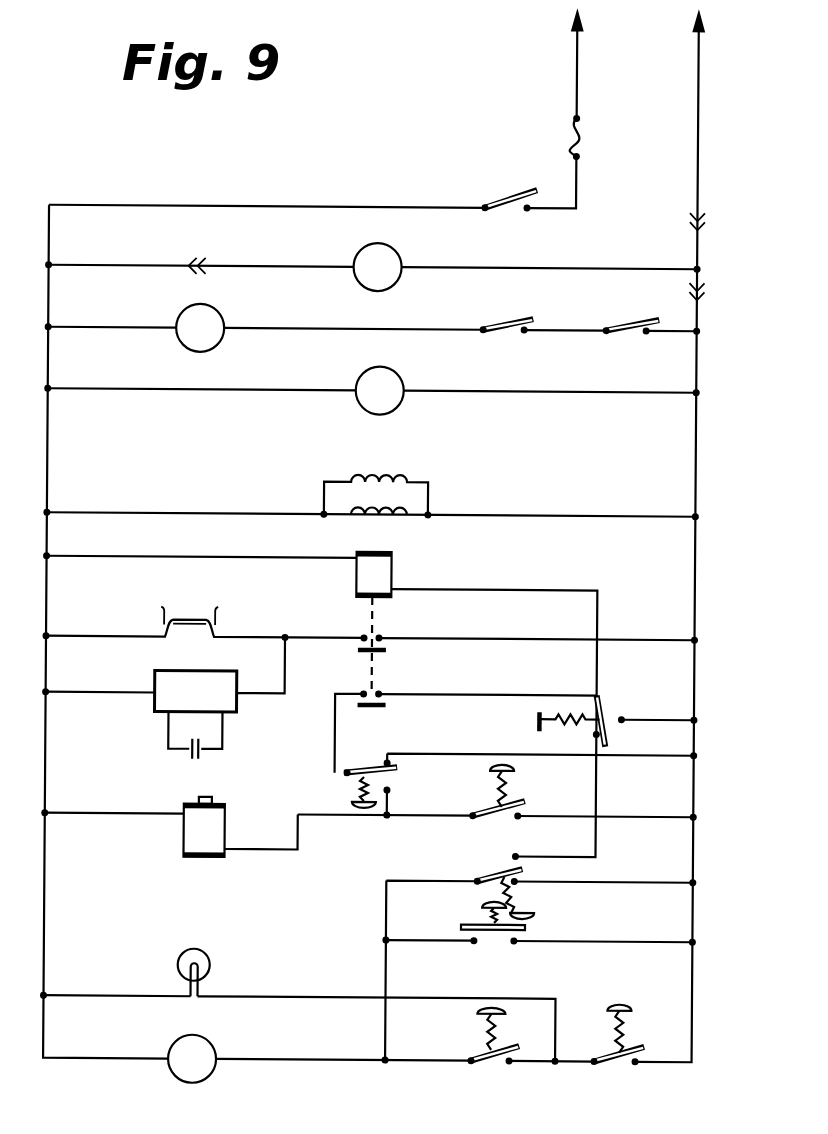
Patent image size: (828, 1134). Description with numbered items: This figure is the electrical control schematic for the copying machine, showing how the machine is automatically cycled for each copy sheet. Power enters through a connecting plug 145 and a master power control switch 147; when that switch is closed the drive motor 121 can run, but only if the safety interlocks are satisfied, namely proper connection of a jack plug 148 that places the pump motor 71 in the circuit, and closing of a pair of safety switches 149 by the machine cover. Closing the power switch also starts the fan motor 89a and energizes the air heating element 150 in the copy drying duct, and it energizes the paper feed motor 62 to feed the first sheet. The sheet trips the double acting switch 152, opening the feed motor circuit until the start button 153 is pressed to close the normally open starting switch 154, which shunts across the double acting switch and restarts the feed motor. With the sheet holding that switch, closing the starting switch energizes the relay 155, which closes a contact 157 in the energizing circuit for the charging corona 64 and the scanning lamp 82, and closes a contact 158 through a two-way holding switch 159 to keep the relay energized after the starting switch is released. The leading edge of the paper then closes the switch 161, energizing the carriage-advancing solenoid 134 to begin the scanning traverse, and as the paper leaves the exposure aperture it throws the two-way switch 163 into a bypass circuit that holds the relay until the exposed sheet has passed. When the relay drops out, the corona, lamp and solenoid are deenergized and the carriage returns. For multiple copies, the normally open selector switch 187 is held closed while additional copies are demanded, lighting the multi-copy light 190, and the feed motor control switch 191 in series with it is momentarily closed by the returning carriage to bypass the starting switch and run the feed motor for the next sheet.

The connecting plug 145 is at (694, 76).
The power control switch 147 is at (530, 190).
The jack plug 148 is at (197, 267).
The pump motor 71 is at (398, 257).
The drive motor 121 is at (221, 320).
The safety switches 149 is at (634, 320).
The fan motor 89a is at (401, 381).
The air heating element 150 is at (408, 501).
The relay 155 is at (388, 567).
The scanning lamp 82 is at (195, 621).
The contact 157 is at (387, 653).
The contact 158 is at (387, 708).
The two-way switch 163 is at (607, 737).
The charging corona 64 is at (168, 731).
The two-way holding switch 159 is at (399, 769).
The switch 161 is at (521, 803).
The carriage-advancing solenoid 134 is at (185, 851).
The double acting switch 152 is at (495, 875).
The start button 153 is at (480, 908).
The starting switch 154 is at (492, 942).
The multi-copy light 190 is at (208, 957).
The paper feed motor 62 is at (216, 1077).
The feed motor control switch 191 is at (500, 1058).
The selector switch 187 is at (625, 1061).